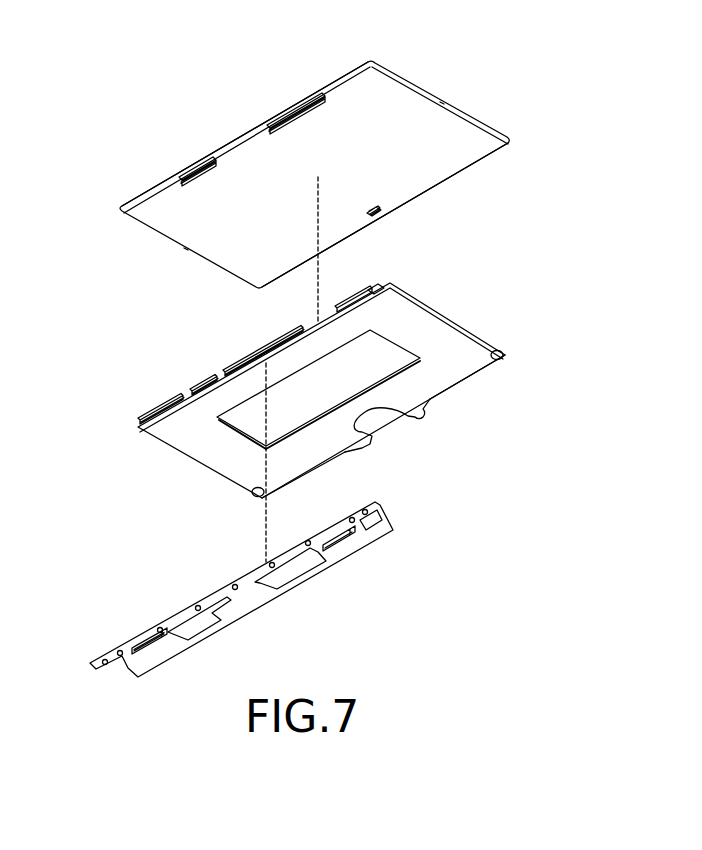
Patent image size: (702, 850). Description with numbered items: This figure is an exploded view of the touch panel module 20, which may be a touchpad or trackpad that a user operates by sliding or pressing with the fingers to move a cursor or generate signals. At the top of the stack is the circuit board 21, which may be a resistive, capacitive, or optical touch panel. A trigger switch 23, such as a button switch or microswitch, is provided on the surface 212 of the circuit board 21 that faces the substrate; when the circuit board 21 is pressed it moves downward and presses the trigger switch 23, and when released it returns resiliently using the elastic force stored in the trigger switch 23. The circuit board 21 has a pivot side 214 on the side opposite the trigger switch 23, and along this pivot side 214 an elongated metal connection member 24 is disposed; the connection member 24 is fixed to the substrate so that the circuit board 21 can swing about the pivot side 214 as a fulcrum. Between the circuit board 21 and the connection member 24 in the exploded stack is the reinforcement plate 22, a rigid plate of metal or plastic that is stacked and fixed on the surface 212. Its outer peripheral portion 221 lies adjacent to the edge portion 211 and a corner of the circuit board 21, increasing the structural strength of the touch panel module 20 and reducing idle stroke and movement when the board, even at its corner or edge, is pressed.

The touch panel module 20 is at (106, 76).
The circuit board 21 is at (505, 121).
The edge portion 211 is at (249, 130).
The surface 212 is at (467, 168).
The pivot side 214 is at (326, 96).
The trigger switch 23 is at (384, 218).
The reinforcement plate 22 is at (505, 331).
The outer peripheral portion 221 is at (476, 376).
The connection member 24 is at (394, 508).